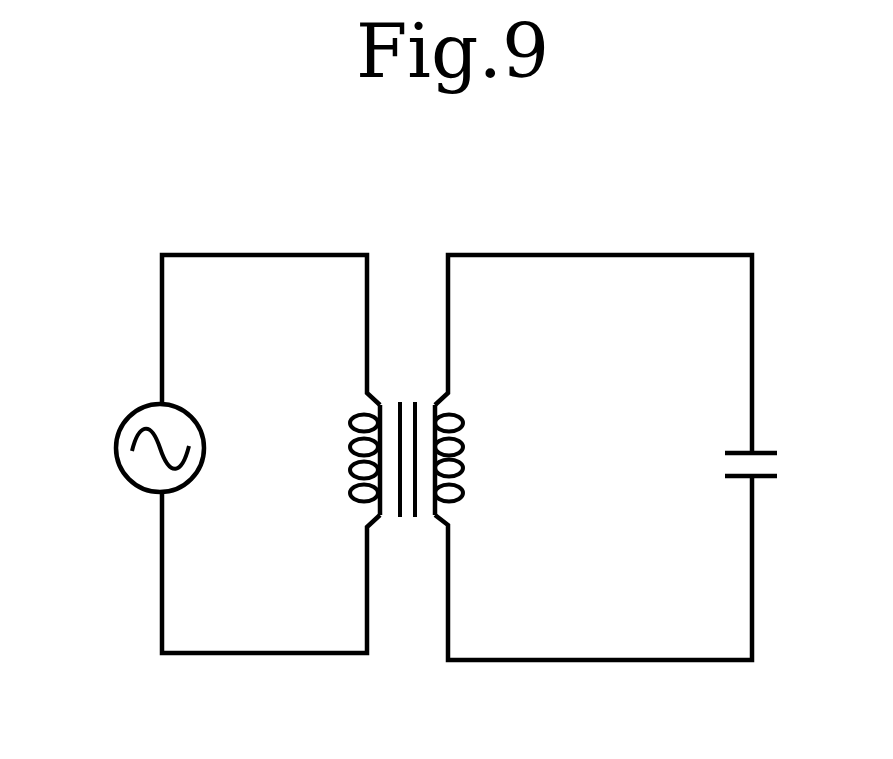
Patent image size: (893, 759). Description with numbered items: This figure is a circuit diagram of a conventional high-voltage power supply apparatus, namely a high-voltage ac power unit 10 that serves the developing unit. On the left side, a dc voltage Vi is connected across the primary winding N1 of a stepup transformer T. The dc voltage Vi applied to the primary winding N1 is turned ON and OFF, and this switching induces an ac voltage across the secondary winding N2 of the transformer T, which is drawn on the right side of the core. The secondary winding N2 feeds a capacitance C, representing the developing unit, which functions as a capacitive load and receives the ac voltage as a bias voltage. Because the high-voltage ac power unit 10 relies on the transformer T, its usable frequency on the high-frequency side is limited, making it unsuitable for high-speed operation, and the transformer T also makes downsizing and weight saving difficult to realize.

The high-voltage ac power unit 10 is at (440, 220).
The stepup transformer T is at (410, 418).
The primary winding N1 is at (322, 460).
The secondary winding N2 is at (483, 460).
The capacitive load C is at (783, 465).
The dc voltage Vi is at (118, 448).